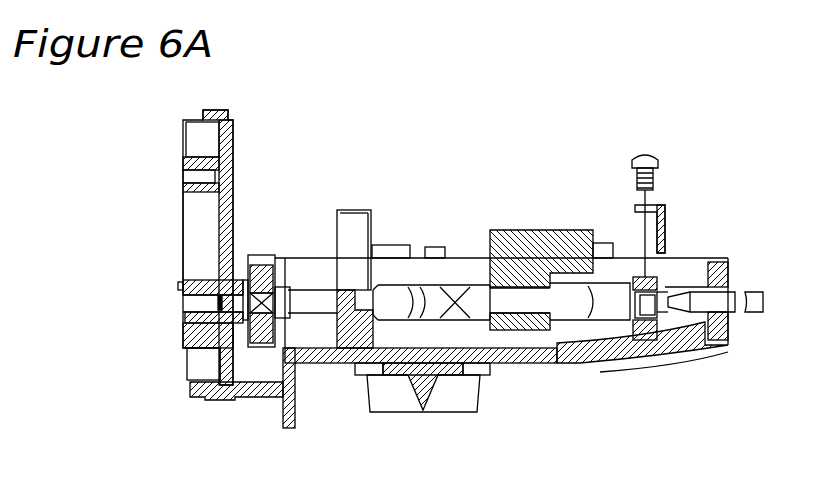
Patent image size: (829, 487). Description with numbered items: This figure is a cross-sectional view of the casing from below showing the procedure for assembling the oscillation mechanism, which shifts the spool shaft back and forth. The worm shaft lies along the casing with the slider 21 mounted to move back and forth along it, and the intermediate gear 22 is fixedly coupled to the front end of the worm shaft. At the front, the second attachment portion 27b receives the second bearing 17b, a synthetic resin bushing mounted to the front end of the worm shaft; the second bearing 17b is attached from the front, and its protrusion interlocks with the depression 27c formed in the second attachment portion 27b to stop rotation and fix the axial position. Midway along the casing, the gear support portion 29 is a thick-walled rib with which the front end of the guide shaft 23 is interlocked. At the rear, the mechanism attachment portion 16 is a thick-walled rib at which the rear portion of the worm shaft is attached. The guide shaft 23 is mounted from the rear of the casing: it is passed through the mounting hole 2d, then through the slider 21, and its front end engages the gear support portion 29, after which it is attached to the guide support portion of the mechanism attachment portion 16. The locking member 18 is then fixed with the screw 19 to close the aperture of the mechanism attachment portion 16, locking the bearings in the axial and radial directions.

The second attachment portion 27b is at (235, 300).
The depression 27c is at (183, 282).
The second bearing 17b is at (188, 318).
The intermediate gear 22 is at (263, 320).
The gear support portion 29 is at (355, 210).
The slider 21 is at (563, 235).
The screw 19 is at (657, 172).
The locking member 18 is at (665, 222).
The mechanism attachment portion 16 is at (722, 290).
The guide shaft 23 is at (752, 300).
The mounting hole 2d is at (722, 313).